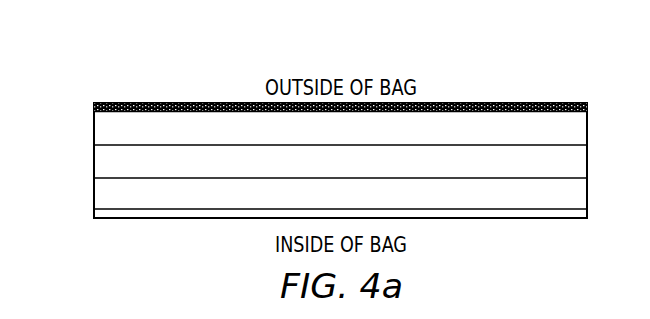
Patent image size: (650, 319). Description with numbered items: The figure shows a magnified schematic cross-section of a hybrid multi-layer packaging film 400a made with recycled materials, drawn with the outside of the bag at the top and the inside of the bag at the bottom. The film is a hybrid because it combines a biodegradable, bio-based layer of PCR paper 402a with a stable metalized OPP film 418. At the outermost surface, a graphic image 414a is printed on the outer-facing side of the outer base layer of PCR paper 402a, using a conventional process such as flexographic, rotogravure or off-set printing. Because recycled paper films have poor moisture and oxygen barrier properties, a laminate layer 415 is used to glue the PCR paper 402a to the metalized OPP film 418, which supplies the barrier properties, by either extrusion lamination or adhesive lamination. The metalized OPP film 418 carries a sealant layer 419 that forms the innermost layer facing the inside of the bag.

The multi-layer packaging film 400a is at (202, 63).
The graphic image 414a is at (94, 107).
The PCR paper 402a is at (94, 146).
The laminate layer 415 is at (94, 175).
The metalized OPP film 418 is at (94, 183).
The sealant layer 419 is at (94, 212).